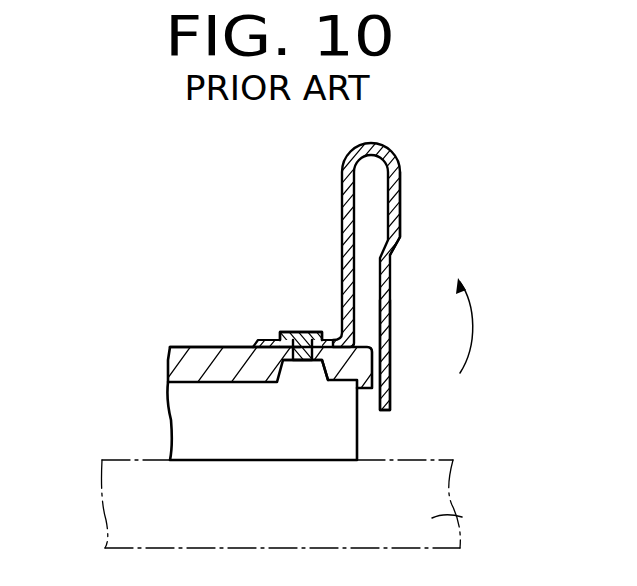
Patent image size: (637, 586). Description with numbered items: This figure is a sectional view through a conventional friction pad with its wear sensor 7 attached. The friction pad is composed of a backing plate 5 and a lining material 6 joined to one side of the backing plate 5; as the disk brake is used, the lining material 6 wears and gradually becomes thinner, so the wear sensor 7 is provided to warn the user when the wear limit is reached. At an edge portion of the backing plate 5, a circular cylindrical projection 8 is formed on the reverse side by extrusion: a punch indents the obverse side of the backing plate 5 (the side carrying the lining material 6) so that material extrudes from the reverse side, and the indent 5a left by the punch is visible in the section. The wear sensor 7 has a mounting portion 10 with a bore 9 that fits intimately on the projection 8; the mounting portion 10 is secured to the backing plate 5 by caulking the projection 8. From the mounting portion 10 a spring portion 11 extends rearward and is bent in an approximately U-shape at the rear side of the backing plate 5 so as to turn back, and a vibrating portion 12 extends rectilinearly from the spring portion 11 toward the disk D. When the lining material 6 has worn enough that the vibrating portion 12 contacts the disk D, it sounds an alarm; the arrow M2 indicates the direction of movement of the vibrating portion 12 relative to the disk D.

The backing plate 5 is at (207, 348).
The indent 5a is at (322, 362).
The lining material 6 is at (190, 420).
The wear sensor 7 is at (338, 160).
The projection 8 is at (300, 340).
The bore 9 is at (300, 350).
The mounting portion 10 is at (333, 340).
The spring portion 11 is at (400, 195).
The vibrating portion 12 is at (390, 385).
The disk D is at (455, 515).
The direction of movement M2 is at (487, 325).